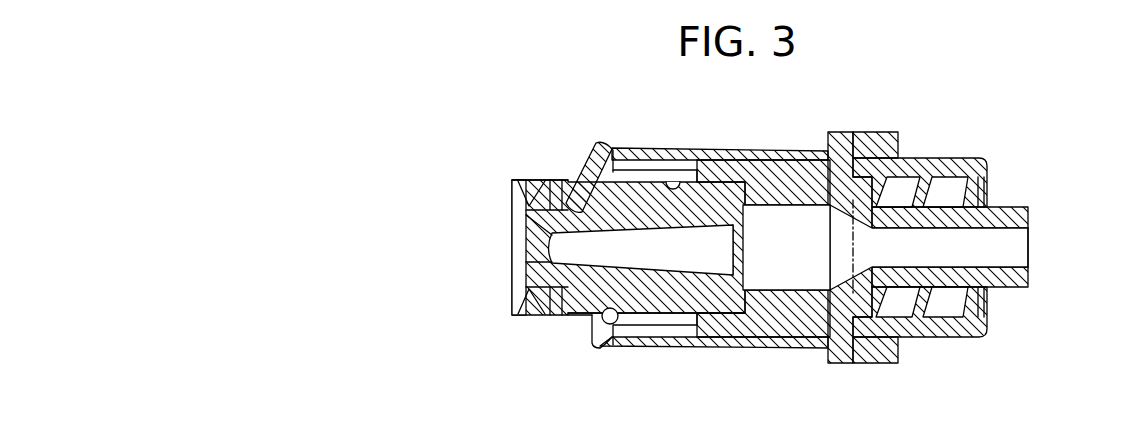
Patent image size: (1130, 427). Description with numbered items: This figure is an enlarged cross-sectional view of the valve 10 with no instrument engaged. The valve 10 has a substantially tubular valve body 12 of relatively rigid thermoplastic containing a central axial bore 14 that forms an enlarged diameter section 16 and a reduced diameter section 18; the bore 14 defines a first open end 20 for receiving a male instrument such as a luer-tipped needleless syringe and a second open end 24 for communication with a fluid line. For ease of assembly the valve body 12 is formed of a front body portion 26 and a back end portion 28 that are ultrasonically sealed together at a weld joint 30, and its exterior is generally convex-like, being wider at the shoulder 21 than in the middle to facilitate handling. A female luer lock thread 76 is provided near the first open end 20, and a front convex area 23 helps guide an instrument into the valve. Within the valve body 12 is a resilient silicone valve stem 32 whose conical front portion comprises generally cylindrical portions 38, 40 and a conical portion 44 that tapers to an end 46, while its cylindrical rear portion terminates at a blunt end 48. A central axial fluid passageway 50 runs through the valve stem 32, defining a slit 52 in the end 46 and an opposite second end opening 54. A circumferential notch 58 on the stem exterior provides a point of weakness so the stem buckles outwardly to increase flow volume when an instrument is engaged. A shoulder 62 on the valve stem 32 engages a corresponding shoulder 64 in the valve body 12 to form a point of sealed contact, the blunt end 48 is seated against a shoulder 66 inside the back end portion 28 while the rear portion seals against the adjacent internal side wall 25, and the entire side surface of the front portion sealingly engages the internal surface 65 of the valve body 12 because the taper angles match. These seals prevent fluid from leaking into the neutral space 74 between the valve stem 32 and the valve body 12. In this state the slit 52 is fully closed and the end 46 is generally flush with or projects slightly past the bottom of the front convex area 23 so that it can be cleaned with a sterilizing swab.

The valve 10 is at (801, 354).
The valve body 12 is at (800, 138).
The central axial bore 14 is at (586, 166).
The enlarged diameter section 16 is at (697, 150).
The reduced diameter section 18 is at (545, 183).
The first open end 20 is at (512, 270).
The shoulder 21 is at (582, 357).
The front convex area 23 is at (525, 212).
The second open end 24 is at (1029, 232).
The internal side wall 25 is at (692, 305).
The front body portion 26 is at (668, 148).
The back end portion 28 is at (963, 156).
The weld joint 30 is at (900, 356).
The valve stem 32 is at (608, 352).
The cylindrical portion 38 is at (515, 302).
The cylindrical portion 40 is at (562, 318).
The conical portion 44 is at (556, 314).
The end 46 is at (522, 228).
The blunt end 48 is at (748, 300).
The central axial fluid passageway 50 is at (642, 337).
The slit 52 is at (528, 238).
The second end opening 54 is at (741, 240).
The circumferential notch 58 is at (655, 265).
The shoulder 62 is at (568, 205).
The shoulder 64 is at (587, 313).
The internal surface 65 is at (561, 193).
The shoulder 66 is at (730, 303).
The neutral space 74 is at (612, 326).
The luer lock thread 76 is at (514, 180).